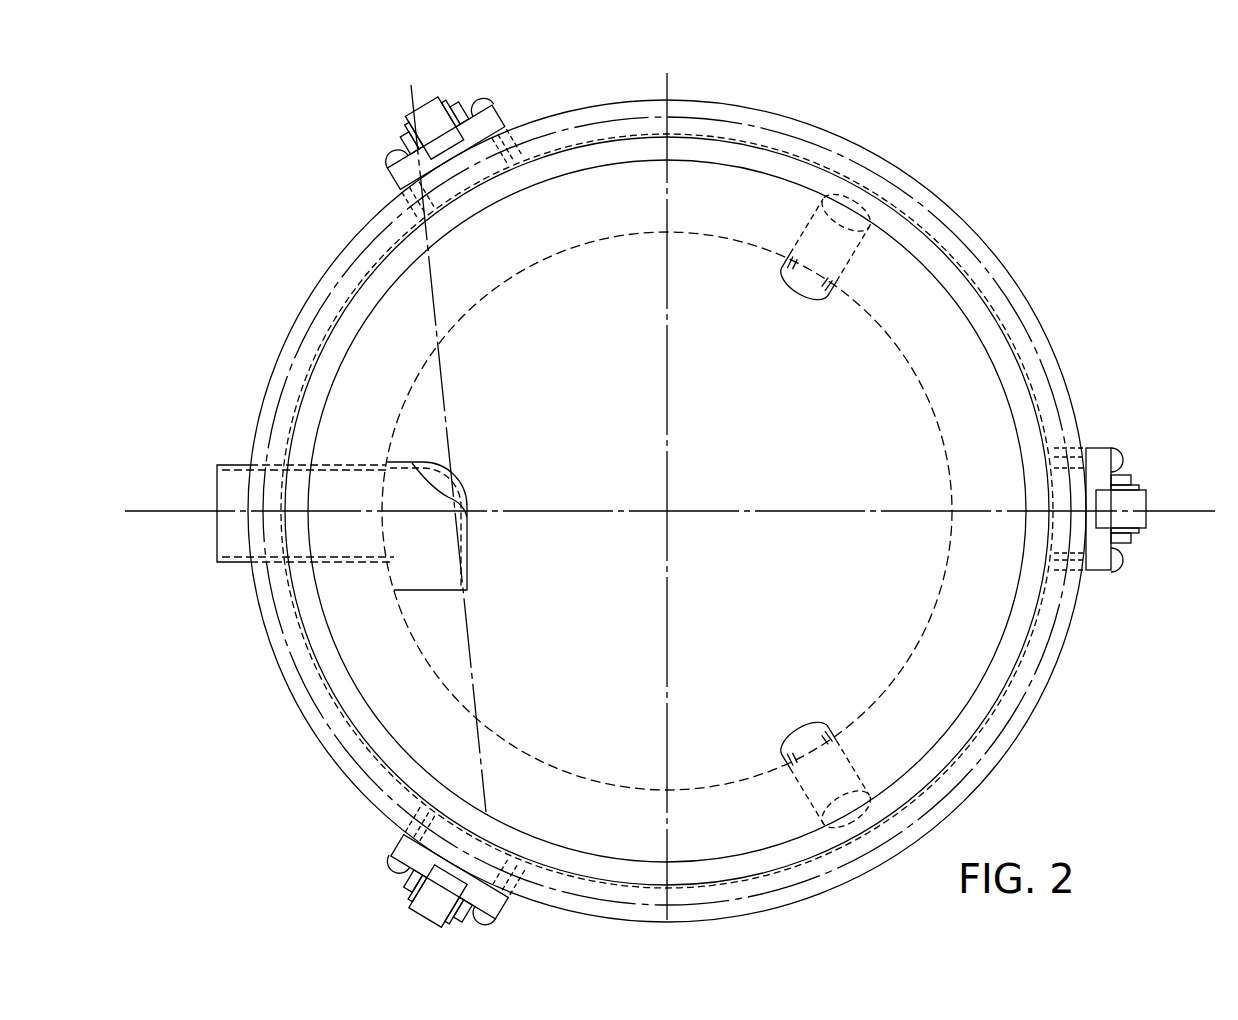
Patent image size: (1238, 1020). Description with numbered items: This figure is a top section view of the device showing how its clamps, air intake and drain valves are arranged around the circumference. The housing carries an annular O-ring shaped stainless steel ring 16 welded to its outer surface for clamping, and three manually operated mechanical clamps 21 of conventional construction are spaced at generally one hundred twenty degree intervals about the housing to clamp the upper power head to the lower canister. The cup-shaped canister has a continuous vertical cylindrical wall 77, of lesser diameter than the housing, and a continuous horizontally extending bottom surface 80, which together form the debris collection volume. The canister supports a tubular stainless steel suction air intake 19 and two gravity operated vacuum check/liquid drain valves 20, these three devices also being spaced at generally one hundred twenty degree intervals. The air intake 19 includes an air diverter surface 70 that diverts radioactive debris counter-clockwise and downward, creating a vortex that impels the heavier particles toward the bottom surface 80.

The stainless steel ring 16 is at (1030, 702).
The suction air intake 19 is at (232, 465).
The vacuum check/liquid drain valves 20 is at (808, 292).
The mechanical clamps 21 is at (440, 102).
The air diverter surface 70 is at (452, 487).
The vertical cylindrical wall 77 is at (432, 364).
The bottom surface 80 is at (798, 443).